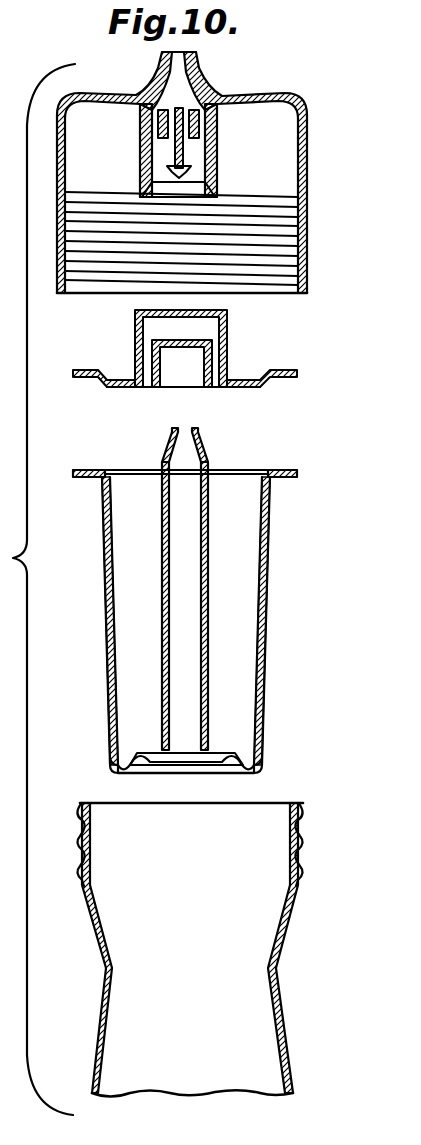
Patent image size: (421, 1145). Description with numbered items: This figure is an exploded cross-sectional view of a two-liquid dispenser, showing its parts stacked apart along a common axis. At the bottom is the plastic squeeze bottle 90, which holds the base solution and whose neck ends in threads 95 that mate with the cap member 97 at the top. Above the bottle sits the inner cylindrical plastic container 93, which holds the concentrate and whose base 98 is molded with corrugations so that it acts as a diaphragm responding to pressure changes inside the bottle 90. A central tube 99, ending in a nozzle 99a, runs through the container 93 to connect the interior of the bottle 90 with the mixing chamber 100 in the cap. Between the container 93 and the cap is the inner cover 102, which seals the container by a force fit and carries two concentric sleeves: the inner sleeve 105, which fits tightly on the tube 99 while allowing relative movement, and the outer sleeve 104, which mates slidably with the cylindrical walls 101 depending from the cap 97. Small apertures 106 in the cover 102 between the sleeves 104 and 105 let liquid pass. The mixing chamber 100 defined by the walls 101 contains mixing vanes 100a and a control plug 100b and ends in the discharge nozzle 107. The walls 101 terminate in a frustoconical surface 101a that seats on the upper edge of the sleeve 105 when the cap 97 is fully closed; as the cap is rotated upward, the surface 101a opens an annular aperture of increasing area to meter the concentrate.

The plastic squeeze bottle 90 is at (95, 1068).
The inner cylindrical plastic container 93 is at (270, 616).
The threads 95 is at (82, 847).
The cap member 97 is at (300, 109).
The base 98 is at (248, 770).
The central tube 99 is at (208, 540).
The nozzle 99a is at (200, 432).
The mixing chamber 100 is at (178, 107).
The mixing vanes 100a is at (199, 118).
The pin 100b is at (172, 178).
The cylindrical walls 101 is at (140, 163).
The frustoconical surface 101a is at (206, 197).
The inner cover 102 is at (107, 372).
The outer sleeve 104 is at (227, 352).
The inner sleeve 105 is at (210, 345).
The small apertures 106 is at (213, 386).
The discharge nozzle 107 is at (163, 51).